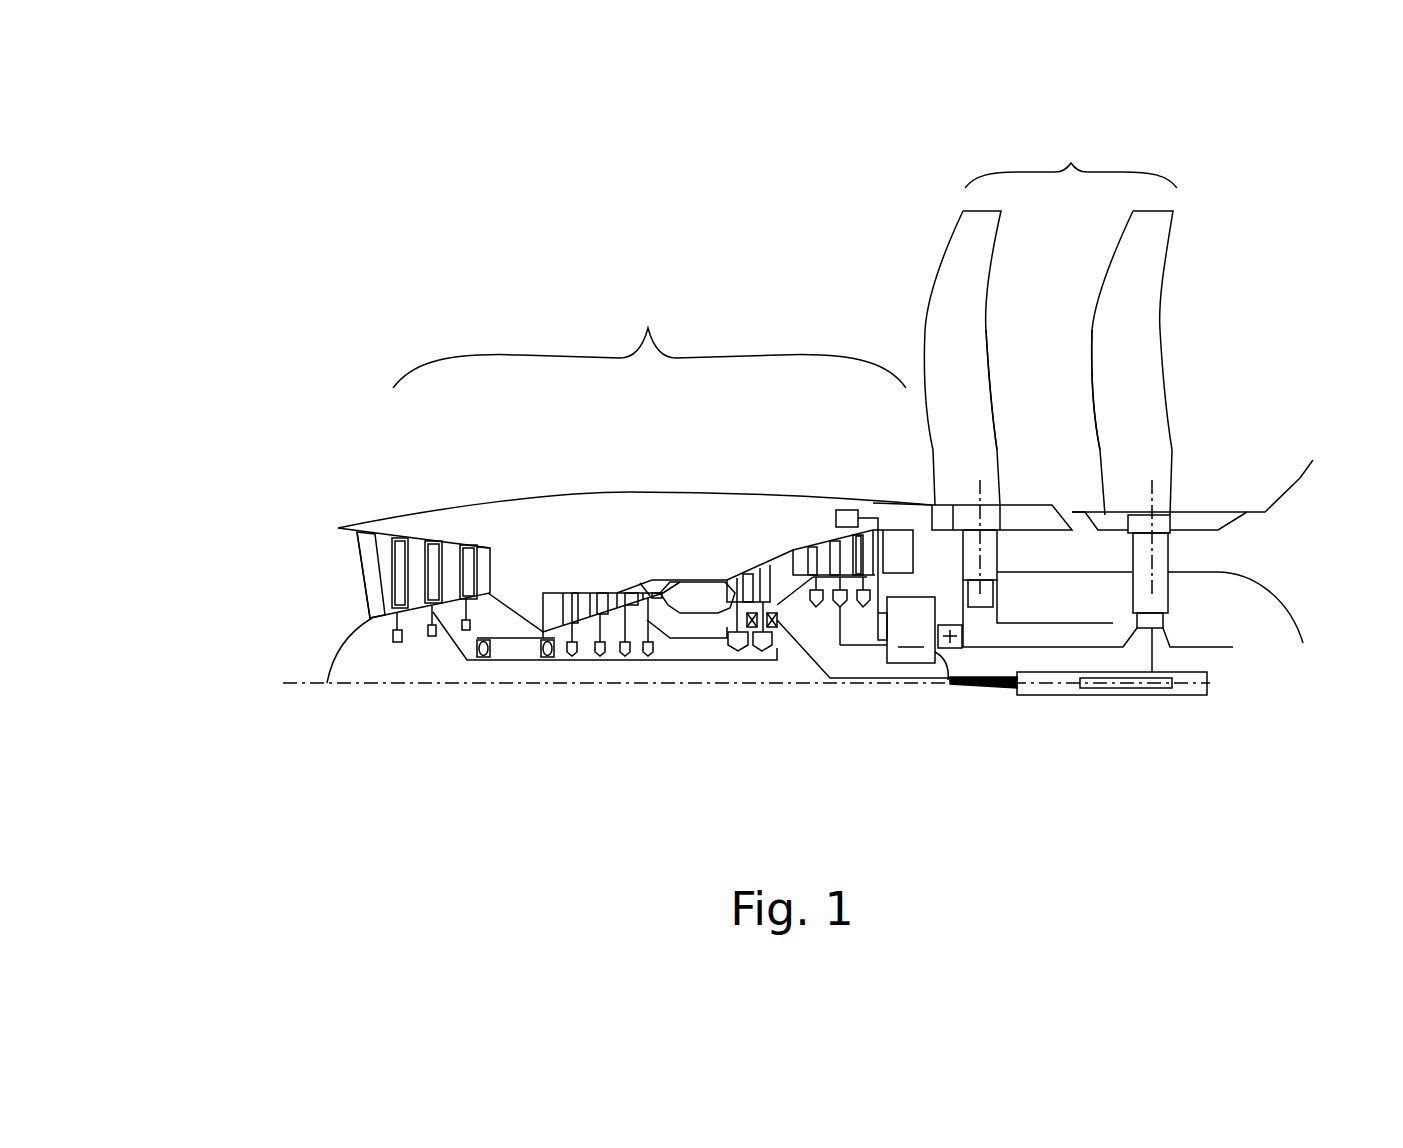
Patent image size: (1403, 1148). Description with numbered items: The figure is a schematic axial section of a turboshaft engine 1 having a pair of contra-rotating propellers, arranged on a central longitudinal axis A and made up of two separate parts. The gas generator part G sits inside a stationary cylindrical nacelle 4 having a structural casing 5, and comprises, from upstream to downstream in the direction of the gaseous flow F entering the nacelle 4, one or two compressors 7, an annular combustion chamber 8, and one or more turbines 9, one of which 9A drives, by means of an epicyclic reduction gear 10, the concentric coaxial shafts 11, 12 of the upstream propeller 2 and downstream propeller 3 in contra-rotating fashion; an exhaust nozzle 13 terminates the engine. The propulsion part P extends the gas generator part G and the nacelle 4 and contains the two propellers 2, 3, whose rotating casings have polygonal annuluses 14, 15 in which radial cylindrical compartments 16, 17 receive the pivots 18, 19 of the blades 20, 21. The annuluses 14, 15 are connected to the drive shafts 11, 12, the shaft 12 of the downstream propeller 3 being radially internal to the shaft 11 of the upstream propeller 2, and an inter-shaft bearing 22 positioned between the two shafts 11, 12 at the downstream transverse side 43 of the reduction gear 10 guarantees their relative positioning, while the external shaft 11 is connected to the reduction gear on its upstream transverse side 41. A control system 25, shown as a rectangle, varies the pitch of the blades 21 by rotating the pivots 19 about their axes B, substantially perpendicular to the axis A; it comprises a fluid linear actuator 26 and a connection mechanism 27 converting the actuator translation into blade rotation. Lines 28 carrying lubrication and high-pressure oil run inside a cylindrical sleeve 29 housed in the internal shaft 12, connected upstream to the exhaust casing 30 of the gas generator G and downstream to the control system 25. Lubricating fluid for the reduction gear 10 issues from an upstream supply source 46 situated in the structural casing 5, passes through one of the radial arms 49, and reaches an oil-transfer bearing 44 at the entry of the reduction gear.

The turboshaft engine 1 is at (437, 214).
The upstream propeller 2 is at (916, 269).
The downstream propeller 3 is at (1180, 293).
The nacelle 4 is at (476, 485).
The structural casing 5 is at (793, 550).
The compressors 7 is at (420, 540).
The annular combustion chamber 8 is at (702, 593).
The turbines 9 is at (767, 580).
The turbine 9A is at (885, 497).
The reduction gear 10 is at (901, 638).
The shaft of upstream propeller 11 is at (1037, 623).
The shaft of downstream propeller 12 is at (1040, 648).
The exhaust nozzle 13 is at (1199, 534).
The polygonal annulus 14 is at (947, 623).
The polygonal annulus 15 is at (1105, 527).
The radial cylindrical compartment 16 is at (1003, 512).
The radial cylindrical compartment 17 is at (1174, 515).
The pivot 18 is at (997, 562).
The pivot 19 is at (1170, 560).
The blade 20 is at (986, 290).
The blade 21 is at (1125, 265).
The inter-shaft bearing 22 is at (898, 547).
The control system 25 is at (1157, 712).
The fluid linear actuator 26 is at (1108, 688).
The connection mechanism 27 is at (1155, 652).
The lines 28 is at (945, 695).
The cylindrical sleeve 29 is at (822, 683).
The exhaust casing 30 is at (793, 647).
The upstream transverse side 41 is at (885, 658).
The downstream transverse side 43 is at (935, 693).
The oil-transfer bearing 44 is at (878, 627).
The upstream supply source 46 is at (833, 505).
The radial arm 49 is at (863, 533).
The central longitudinal axis A is at (362, 685).
The blade axes B is at (1003, 450).
The gaseous flow F is at (306, 605).
The gas generator part G is at (649, 342).
The propulsion part P is at (1071, 159).